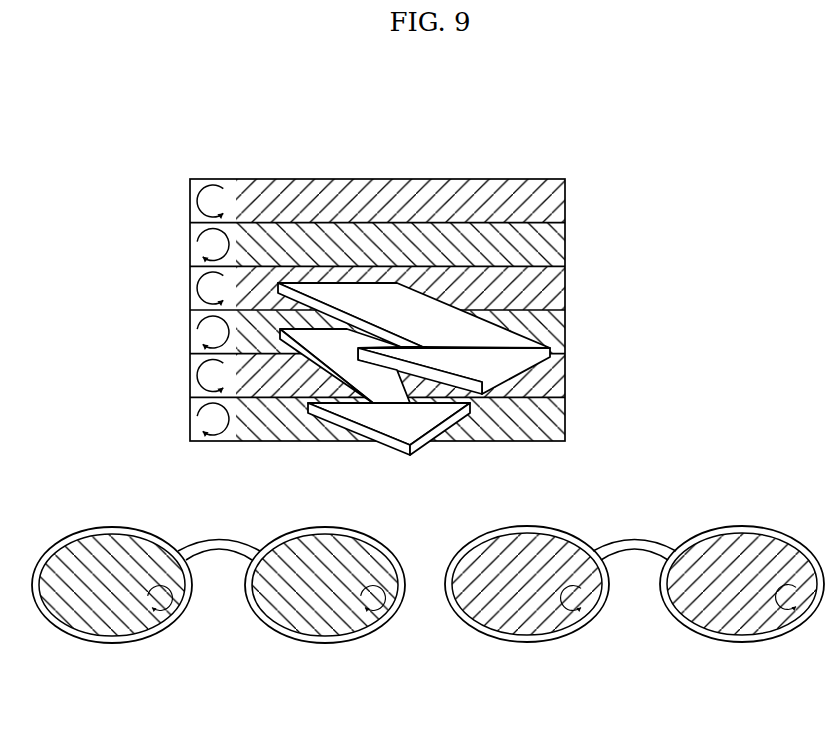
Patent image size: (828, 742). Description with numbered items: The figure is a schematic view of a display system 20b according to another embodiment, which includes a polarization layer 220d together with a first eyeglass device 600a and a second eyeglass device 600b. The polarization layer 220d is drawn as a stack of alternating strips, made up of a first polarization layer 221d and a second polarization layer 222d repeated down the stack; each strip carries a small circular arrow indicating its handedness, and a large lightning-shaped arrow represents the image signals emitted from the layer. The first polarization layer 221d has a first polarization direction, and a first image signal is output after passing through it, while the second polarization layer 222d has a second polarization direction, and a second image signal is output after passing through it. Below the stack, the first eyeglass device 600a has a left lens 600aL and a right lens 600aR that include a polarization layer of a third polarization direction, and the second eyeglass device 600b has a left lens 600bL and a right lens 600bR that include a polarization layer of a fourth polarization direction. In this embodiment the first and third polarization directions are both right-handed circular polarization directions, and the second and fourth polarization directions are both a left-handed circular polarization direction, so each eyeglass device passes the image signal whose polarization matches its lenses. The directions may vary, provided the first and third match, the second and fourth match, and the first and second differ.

The display system 20b is at (659, 167).
The polarization layer 220d is at (662, 200).
The first polarization layer 221d is at (568, 201).
The second polarization layer 222d is at (568, 245).
The second eyeglass device 600b is at (218, 540).
The left lens 600bL is at (110, 624).
The right lens 600bR is at (325, 624).
The first eyeglass device 600a is at (634, 542).
The left lens 600aL is at (527, 623).
The right lens 600aR is at (740, 623).